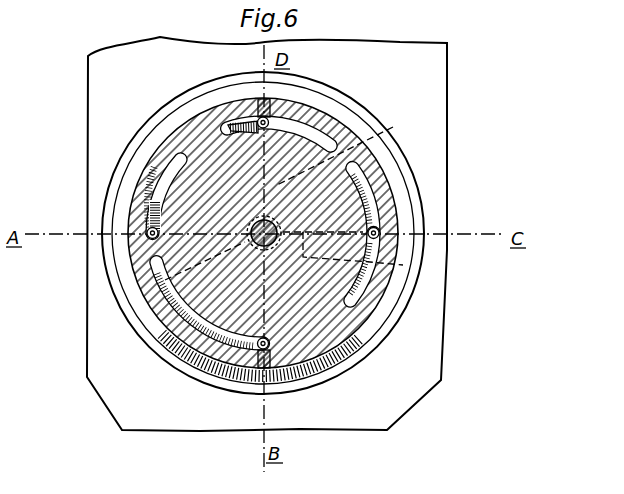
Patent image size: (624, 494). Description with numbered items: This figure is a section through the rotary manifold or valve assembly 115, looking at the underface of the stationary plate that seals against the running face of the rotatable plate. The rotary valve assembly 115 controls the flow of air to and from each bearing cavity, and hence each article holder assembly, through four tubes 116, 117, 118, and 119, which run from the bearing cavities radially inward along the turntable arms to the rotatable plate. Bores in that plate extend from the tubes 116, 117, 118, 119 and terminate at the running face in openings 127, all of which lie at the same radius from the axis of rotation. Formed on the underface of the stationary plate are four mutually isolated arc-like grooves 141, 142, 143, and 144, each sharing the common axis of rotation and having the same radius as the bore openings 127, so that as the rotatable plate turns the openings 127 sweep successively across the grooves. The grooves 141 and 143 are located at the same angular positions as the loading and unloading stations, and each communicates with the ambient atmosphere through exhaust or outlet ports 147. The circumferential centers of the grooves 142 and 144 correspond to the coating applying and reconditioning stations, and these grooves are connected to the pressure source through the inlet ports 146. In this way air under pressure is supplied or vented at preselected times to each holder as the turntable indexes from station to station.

The rotary manifold or valve assembly 115 is at (333, 373).
The tube 116 is at (136, 312).
The tube 117 is at (380, 314).
The tube 118 is at (403, 265).
The tube 119 is at (396, 128).
The openings 127 is at (259, 117).
The arc-like groove 141 is at (152, 205).
The arc-like groove 142 is at (376, 280).
The arc-like groove 143 is at (370, 178).
The arc-like groove 144 is at (330, 125).
The inlet ports 146 is at (293, 103).
The exhaust or outlet ports 147 is at (172, 160).